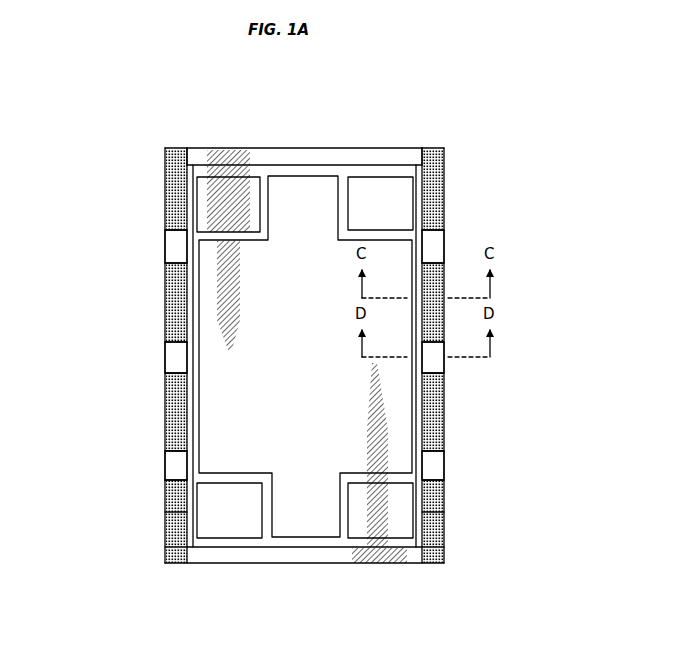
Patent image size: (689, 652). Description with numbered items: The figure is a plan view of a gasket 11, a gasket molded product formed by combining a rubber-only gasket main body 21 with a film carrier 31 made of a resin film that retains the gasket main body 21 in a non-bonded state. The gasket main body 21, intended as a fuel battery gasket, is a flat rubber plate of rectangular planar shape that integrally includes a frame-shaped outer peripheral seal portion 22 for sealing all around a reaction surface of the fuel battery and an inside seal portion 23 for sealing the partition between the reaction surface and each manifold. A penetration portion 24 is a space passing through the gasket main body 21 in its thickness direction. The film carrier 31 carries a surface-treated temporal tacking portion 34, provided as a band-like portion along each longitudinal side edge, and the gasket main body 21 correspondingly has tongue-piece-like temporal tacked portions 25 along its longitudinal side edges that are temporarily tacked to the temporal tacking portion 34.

The gasket 11 is at (158, 158).
The gasket main body 21 is at (445, 150).
The outer peripheral seal portion 22 is at (178, 297).
The inside seal portion 23 is at (213, 232).
The penetration portion 24 is at (255, 168).
The temporal tacked portion 25 is at (178, 246).
The film carrier 31 is at (445, 560).
The temporal tacking portion 34 is at (178, 512).